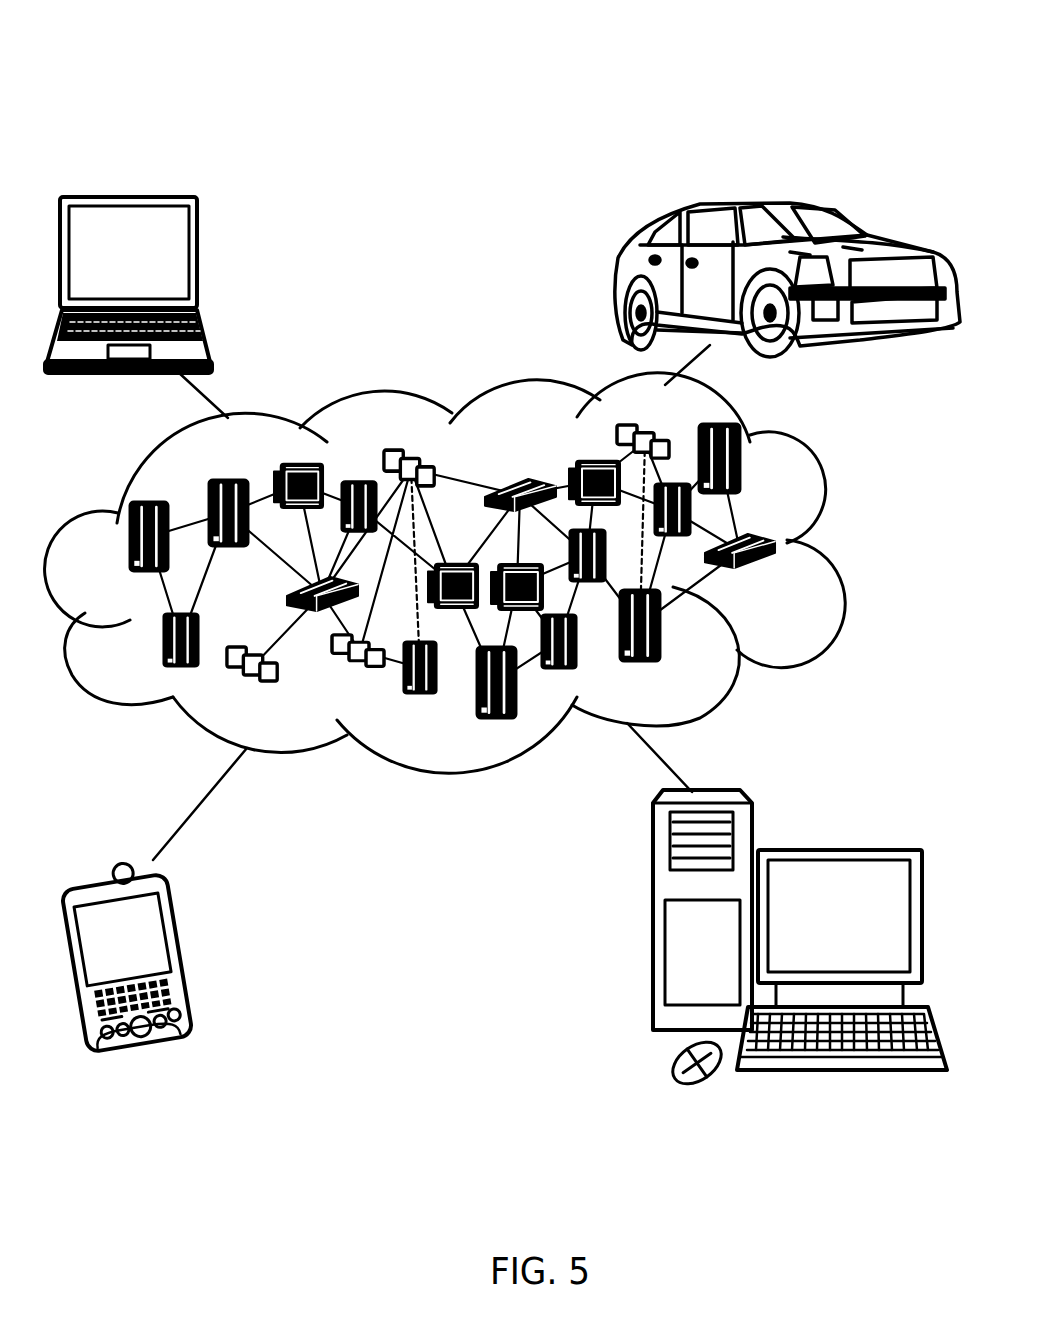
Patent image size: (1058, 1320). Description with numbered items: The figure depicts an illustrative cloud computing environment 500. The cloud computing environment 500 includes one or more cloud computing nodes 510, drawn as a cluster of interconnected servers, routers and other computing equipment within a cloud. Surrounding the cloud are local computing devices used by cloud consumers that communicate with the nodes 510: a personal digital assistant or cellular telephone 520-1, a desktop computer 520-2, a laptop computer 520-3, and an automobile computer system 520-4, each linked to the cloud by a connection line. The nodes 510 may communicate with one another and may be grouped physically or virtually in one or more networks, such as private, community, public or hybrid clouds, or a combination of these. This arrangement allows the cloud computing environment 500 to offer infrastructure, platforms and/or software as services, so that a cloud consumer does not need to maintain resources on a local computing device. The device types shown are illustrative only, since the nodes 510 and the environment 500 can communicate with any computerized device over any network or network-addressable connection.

The cloud computing environment 500 is at (786, 50).
The cloud computing nodes 510 is at (790, 580).
The personal digital assistant or cellular telephone 520-1 is at (190, 950).
The desktop computer 520-2 is at (848, 830).
The laptop computer 520-3 is at (197, 264).
The automobile computer system 520-4 is at (620, 276).